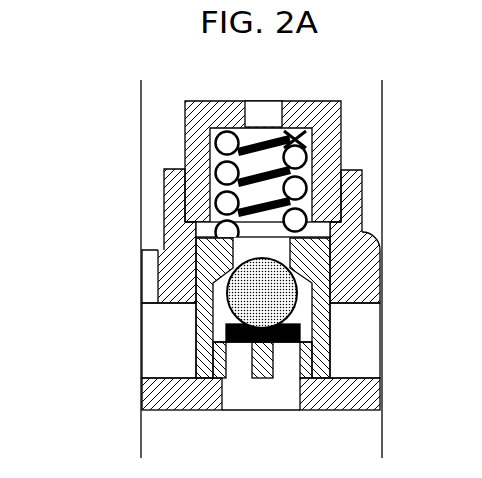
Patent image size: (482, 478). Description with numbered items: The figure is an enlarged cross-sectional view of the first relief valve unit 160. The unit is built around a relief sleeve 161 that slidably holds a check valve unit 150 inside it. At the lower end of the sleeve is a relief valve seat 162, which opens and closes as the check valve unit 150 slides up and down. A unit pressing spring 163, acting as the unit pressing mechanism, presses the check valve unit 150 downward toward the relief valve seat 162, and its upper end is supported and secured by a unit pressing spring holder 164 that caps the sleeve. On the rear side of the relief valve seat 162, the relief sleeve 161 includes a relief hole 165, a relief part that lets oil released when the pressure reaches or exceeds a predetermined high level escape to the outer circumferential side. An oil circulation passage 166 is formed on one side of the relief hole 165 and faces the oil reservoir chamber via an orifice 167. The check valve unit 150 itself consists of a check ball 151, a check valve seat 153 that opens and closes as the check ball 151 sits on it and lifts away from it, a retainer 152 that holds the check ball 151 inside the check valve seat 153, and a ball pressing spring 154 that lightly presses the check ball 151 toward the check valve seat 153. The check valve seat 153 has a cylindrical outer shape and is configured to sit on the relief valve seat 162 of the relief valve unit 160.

The first relief valve unit 160 is at (112, 130).
The relief sleeve 161 is at (347, 268).
The relief valve seat 162 is at (340, 397).
The unit pressing spring 163 is at (296, 158).
The unit pressing spring holder 164 is at (343, 133).
The relief hole 165 is at (353, 343).
The oil circulation passage 166 is at (156, 214).
The orifice 167 is at (142, 258).
The check valve unit 150 is at (173, 310).
The check ball 151 is at (258, 292).
The retainer 152 is at (212, 358).
The check valve seat 153 is at (232, 262).
The ball pressing spring 154 is at (224, 331).